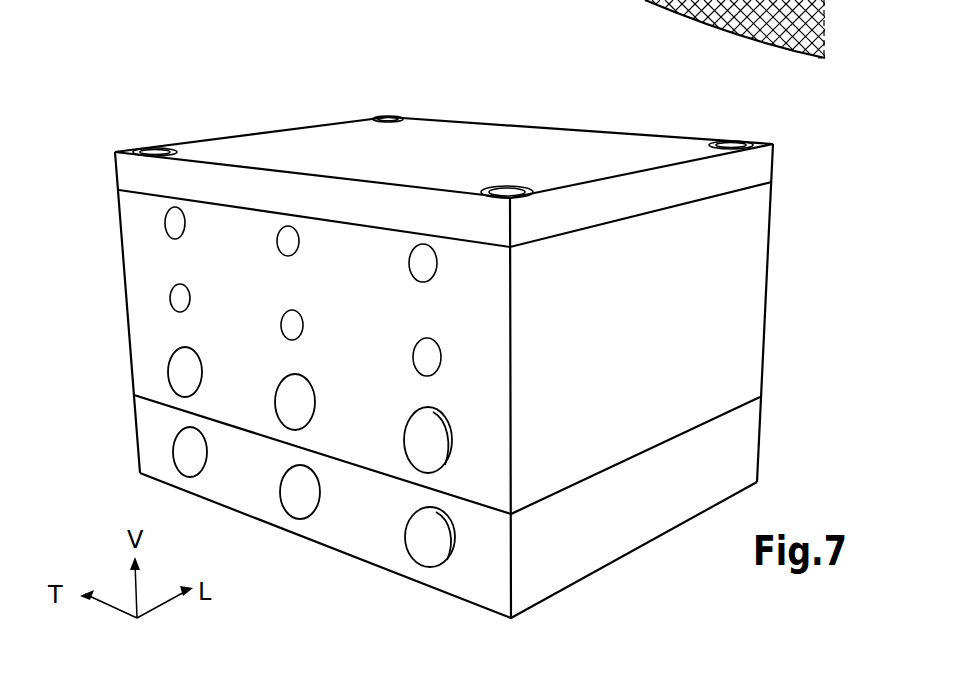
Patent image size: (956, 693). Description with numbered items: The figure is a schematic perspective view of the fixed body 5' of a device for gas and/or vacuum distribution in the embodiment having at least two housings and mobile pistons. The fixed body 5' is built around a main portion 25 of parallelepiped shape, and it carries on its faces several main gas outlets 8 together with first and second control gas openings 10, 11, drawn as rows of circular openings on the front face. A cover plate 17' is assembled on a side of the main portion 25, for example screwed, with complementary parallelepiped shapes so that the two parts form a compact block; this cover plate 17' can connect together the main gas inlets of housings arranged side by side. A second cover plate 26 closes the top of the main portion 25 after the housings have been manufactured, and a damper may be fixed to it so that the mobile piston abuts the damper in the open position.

The fixed body 5' is at (444, 315).
The main gas outlet 8 is at (387, 493).
The first control gas opening 10 is at (172, 223).
The second control gas opening 11 is at (177, 297).
The cover plate 17' is at (447, 506).
The main portion 25 is at (737, 360).
The second cover plate 26 is at (458, 147).